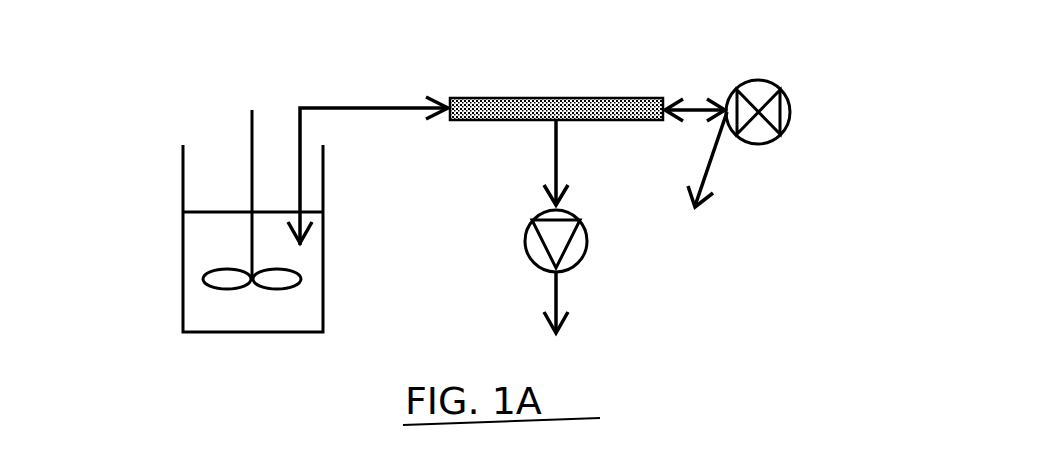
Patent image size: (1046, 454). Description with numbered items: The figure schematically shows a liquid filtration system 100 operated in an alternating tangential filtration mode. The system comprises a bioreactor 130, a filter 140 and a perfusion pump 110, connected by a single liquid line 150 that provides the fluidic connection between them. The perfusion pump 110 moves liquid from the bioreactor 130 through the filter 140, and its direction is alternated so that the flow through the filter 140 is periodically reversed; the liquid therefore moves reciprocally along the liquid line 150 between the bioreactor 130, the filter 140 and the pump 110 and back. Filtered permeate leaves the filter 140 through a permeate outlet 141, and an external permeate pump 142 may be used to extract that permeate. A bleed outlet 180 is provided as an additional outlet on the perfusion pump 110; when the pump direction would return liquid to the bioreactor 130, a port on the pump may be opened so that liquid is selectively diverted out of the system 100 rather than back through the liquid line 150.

The liquid filtration system 100 is at (153, 43).
The perfusion pump 110 is at (787, 95).
The bioreactor 130 is at (193, 248).
The filter 140 is at (580, 98).
The permeate outlet 141 is at (548, 142).
The external permeate pump 142 is at (590, 255).
The liquid line 150 is at (325, 107).
The bleed outlet 180 is at (712, 170).